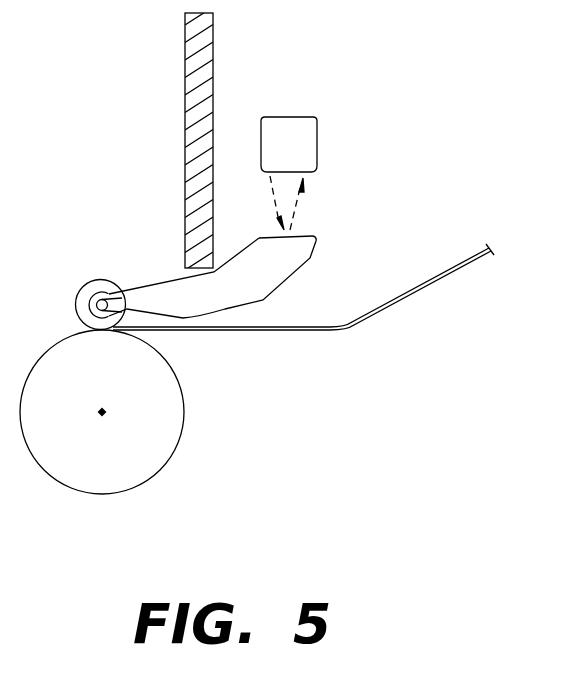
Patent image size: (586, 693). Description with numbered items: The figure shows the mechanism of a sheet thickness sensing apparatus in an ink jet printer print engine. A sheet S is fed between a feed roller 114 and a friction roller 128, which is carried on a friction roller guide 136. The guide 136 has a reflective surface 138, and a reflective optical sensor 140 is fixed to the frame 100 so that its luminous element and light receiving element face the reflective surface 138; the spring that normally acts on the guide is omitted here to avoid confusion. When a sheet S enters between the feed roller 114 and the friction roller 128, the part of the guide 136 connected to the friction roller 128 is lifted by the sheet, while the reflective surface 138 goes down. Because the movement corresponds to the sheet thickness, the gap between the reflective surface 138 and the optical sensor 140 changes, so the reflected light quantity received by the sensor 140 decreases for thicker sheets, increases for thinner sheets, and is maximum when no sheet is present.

The frame 100 is at (189, 64).
The feed roller 114 is at (183, 408).
The friction roller 128 is at (84, 291).
The friction roller guide 136 is at (285, 277).
The reflective surface 138 is at (307, 229).
The reflective optical sensor 140 is at (313, 138).
The sheet S is at (418, 288).